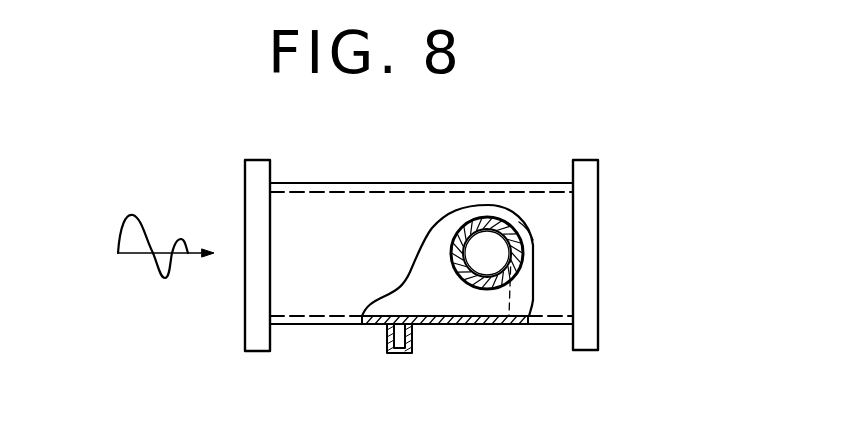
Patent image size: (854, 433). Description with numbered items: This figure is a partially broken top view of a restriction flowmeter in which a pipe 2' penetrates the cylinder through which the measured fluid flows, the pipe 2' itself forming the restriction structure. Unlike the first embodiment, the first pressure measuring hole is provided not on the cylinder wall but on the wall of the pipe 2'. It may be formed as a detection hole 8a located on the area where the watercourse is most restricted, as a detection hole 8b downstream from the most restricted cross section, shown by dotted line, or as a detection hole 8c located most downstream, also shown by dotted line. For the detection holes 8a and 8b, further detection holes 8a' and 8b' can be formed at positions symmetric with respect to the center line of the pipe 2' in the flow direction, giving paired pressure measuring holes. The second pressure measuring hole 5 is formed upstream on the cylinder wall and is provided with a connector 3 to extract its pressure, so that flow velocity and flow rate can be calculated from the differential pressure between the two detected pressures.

The pipe 2' is at (466, 210).
The detection hole 8a' is at (487, 209).
The detection hole 8b' is at (518, 193).
The detection hole 8c is at (523, 257).
The detection hole 8a is at (447, 289).
The detection hole 8b is at (536, 320).
The second pressure measuring hole 5 is at (387, 332).
The connector 3 is at (412, 340).